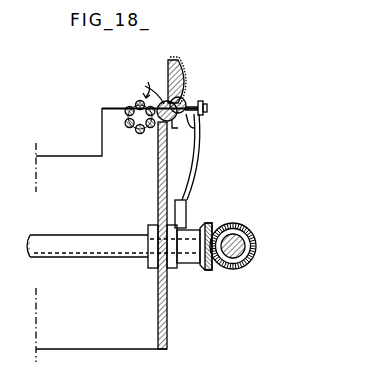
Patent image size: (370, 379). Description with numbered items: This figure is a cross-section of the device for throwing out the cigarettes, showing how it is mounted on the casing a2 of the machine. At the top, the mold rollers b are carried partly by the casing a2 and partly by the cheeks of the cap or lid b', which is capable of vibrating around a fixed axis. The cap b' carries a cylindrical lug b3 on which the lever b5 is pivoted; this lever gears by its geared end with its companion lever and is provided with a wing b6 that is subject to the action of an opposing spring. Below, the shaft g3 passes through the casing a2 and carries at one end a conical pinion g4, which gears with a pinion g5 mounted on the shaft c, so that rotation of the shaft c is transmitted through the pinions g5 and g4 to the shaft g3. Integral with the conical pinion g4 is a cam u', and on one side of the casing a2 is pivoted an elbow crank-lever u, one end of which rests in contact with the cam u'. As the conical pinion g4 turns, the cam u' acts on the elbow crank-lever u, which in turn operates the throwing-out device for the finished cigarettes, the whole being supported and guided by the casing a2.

The casing a2 is at (158, 166).
The rollers b is at (148, 110).
The cap or lid b' is at (192, 78).
The cylindrical lug b3 is at (130, 101).
The lever b5 is at (186, 118).
The wing b6 is at (203, 107).
The elbow crank-lever u is at (198, 157).
The cam u' is at (197, 210).
The shaft g3 is at (92, 246).
The conical pinion g4 is at (206, 263).
The pinion g5 is at (237, 269).
The shaft c is at (256, 243).